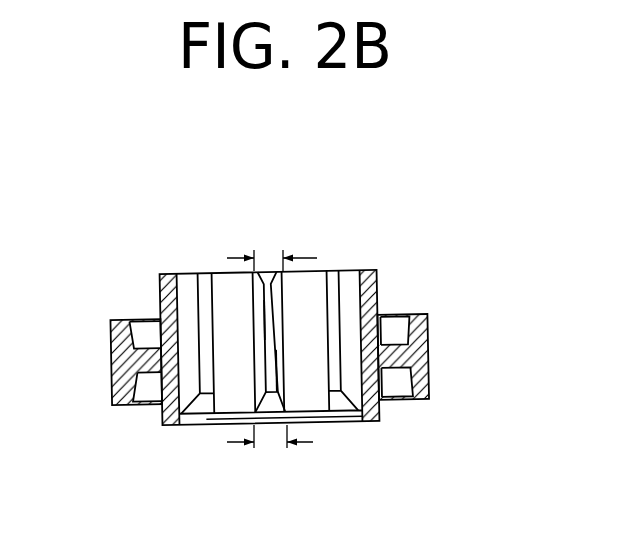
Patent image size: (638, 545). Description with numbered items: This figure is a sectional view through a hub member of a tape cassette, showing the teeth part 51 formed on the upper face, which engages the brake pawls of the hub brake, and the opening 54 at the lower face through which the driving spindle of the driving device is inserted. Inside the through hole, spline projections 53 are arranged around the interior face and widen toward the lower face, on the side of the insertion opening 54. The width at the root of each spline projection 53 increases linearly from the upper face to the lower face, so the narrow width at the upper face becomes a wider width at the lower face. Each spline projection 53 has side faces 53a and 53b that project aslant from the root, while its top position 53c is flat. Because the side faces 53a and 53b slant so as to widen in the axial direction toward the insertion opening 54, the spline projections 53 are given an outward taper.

The teeth part 51 is at (160, 288).
The spline projection 53 is at (268, 279).
The side face 53a is at (259, 328).
The side face 53b is at (282, 373).
The top position 53c is at (268, 352).
The opening 54 is at (222, 426).